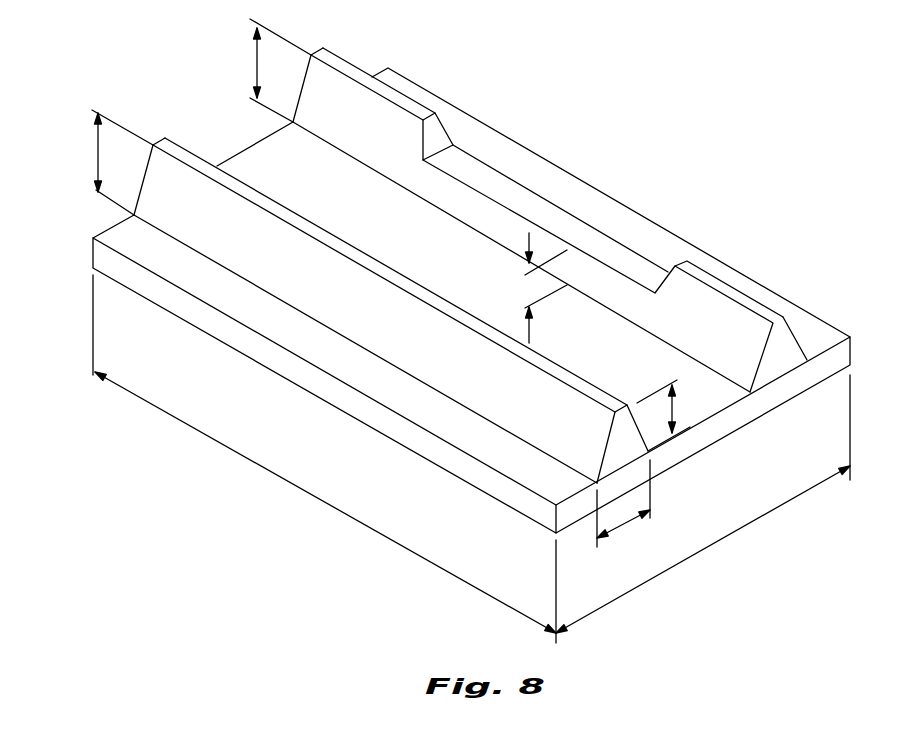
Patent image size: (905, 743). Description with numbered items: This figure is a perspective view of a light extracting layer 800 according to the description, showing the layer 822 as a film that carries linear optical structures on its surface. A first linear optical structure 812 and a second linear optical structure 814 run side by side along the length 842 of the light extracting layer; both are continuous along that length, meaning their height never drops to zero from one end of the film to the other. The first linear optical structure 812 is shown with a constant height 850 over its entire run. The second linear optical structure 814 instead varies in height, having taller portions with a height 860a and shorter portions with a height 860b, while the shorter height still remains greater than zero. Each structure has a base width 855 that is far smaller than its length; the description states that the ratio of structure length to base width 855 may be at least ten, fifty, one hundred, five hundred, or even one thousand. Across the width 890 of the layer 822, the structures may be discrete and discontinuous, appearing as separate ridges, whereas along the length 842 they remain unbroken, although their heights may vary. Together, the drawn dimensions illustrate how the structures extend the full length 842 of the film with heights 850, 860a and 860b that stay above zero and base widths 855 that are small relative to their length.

The block 800 is at (712, 167).
The first linear optical structure 812 is at (353, 277).
The second linear optical structure 814 is at (406, 115).
The layer 822 is at (578, 195).
The length of the light extracting layer 842 is at (299, 488).
The constant height 850 is at (96, 158).
The base width 855 is at (623, 525).
The taller height 860a is at (257, 63).
The shorter height 860b is at (531, 336).
The width of the layer 890 is at (702, 553).